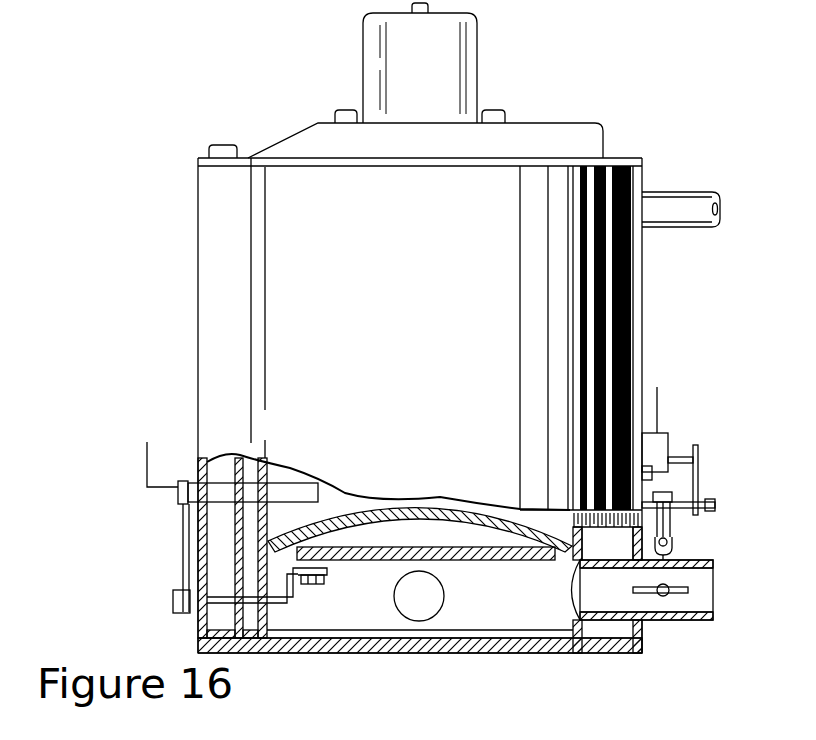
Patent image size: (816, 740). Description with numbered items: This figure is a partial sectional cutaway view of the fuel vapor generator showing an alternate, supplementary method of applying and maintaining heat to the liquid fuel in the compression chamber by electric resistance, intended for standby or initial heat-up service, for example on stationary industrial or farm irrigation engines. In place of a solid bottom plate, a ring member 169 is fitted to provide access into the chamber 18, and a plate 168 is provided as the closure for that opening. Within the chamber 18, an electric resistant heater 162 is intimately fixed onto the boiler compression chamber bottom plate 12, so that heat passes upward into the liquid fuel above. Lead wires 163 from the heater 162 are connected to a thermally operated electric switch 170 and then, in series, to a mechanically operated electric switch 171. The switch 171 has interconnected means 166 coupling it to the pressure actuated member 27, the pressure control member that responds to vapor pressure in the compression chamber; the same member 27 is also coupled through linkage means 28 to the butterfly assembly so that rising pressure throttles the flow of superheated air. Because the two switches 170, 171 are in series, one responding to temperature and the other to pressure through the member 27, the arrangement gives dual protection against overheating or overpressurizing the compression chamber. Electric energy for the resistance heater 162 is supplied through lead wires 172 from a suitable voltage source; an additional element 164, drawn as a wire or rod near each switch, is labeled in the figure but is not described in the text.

The boiler compression chamber bottom plate 12 is at (488, 523).
The chamber 18 is at (475, 607).
The pressure control member 27 is at (707, 510).
The linkage means 28 is at (670, 525).
The electric resistant heater 162 is at (355, 553).
The lead wires 163 is at (290, 572).
The rod 164 is at (145, 455).
The interconnected means 166 is at (700, 475).
The plate 168 is at (515, 652).
The ring member 169 is at (205, 638).
The thermally operated electric switch 170 is at (178, 495).
The mechanically operated electric switch 171 is at (647, 472).
The lead wires 172 is at (668, 440).